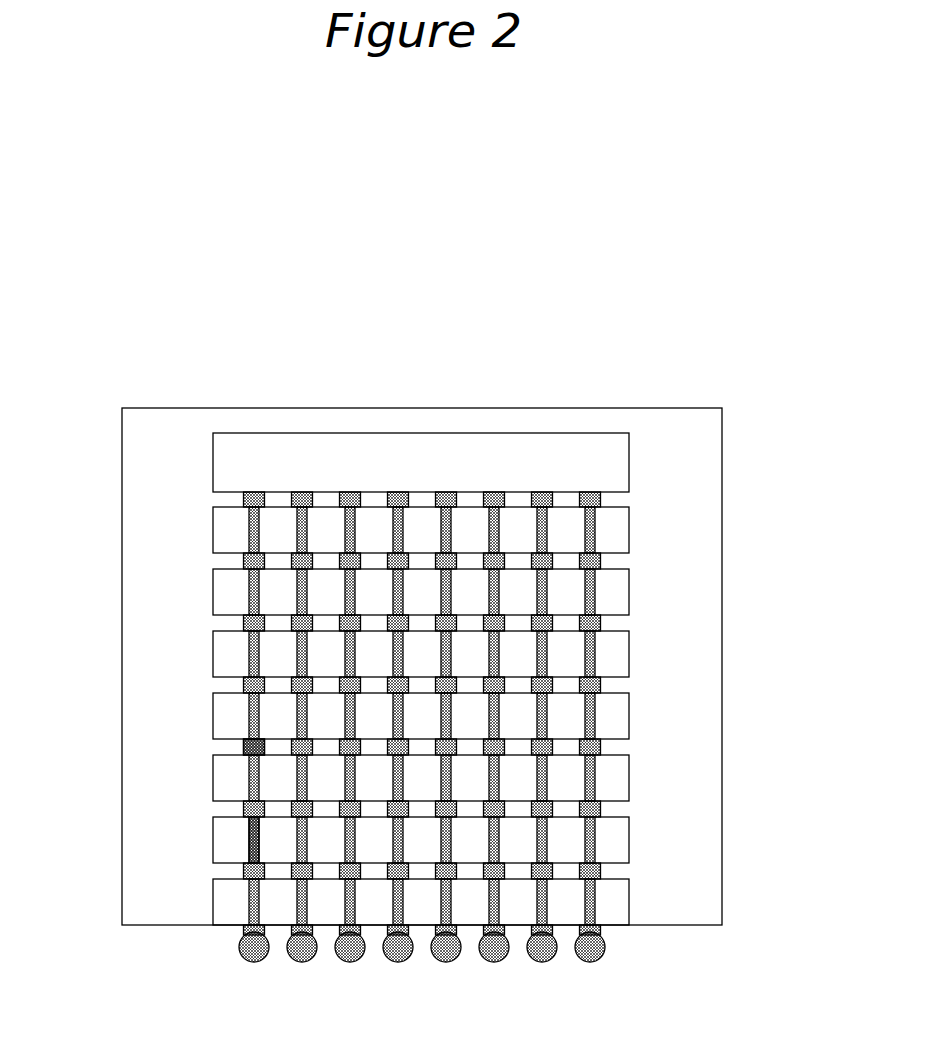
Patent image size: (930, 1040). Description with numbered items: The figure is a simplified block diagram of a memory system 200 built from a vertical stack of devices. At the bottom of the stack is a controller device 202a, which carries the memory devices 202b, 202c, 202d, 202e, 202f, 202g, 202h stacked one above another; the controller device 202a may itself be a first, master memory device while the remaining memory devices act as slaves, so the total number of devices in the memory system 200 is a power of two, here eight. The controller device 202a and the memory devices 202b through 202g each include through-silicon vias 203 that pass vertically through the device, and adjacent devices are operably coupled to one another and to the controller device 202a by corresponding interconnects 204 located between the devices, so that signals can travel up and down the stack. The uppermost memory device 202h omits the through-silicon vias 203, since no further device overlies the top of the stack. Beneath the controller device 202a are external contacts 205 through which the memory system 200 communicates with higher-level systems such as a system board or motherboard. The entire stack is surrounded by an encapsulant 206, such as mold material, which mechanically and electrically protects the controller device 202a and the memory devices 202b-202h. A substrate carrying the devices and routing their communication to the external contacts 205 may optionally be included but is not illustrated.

The memory system 200 is at (135, 275).
The controller device 202a is at (629, 899).
The memory device 202b is at (629, 837).
The memory device 202c is at (629, 775).
The memory device 202d is at (629, 713).
The memory device 202e is at (629, 651).
The memory device 202f is at (629, 589).
The memory device 202g is at (629, 527).
The uppermost memory device 202h is at (629, 465).
The through-silicon via 203 is at (253, 850).
The interconnect 204 is at (243, 750).
The external contact 205 is at (240, 952).
The encapsulant / package housing 206 is at (170, 608).